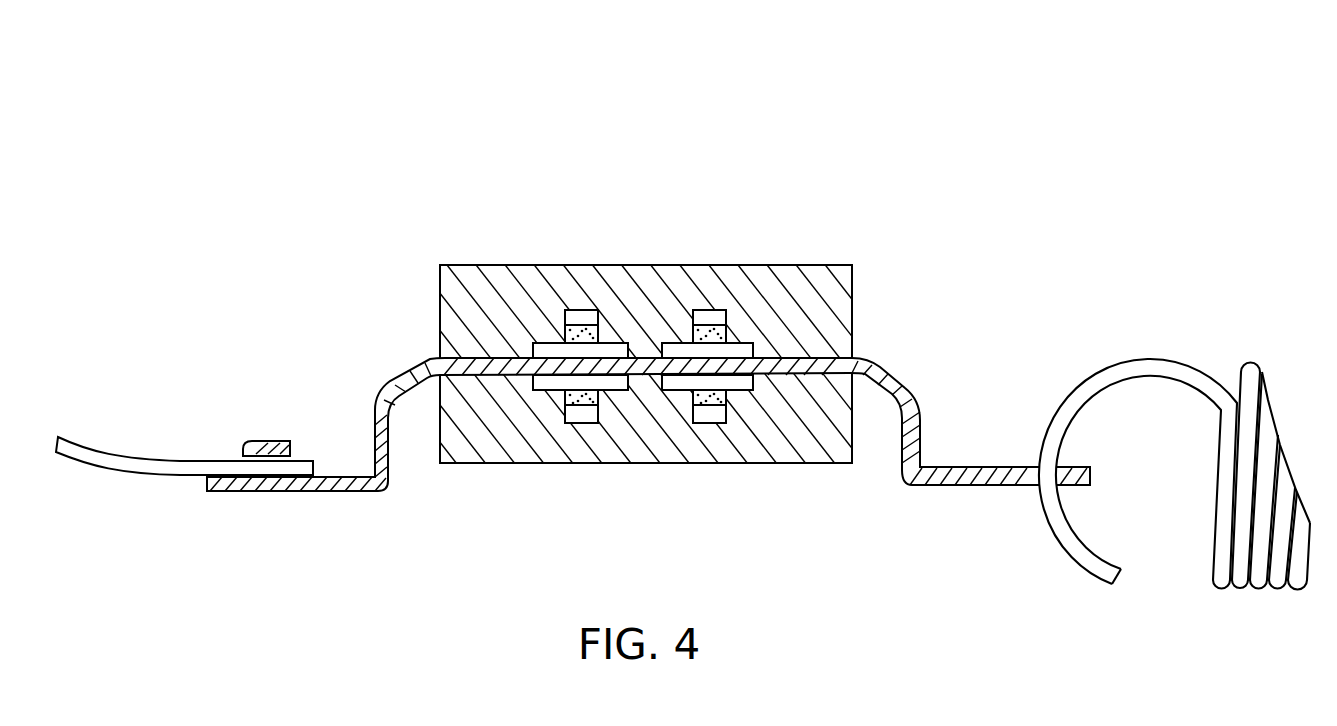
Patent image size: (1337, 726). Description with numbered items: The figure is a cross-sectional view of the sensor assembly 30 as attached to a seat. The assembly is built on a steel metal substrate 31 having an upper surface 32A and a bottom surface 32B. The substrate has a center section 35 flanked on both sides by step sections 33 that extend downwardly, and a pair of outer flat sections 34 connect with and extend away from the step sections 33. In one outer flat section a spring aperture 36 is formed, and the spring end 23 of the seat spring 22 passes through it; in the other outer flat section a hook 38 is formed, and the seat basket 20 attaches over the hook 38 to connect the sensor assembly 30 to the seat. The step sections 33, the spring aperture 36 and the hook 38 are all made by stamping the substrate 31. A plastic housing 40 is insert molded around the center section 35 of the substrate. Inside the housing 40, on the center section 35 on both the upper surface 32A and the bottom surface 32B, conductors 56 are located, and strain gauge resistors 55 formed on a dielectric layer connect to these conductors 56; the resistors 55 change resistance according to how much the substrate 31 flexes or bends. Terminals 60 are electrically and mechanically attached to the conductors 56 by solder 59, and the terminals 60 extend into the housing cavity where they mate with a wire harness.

The seat basket 20 is at (116, 459).
The seat spring 22 is at (1160, 362).
The spring end 23 is at (1088, 581).
The sensor assembly 30 is at (631, 165).
The metal substrate 31 is at (207, 489).
The upper surface 32A is at (348, 477).
The bottom surface 32B is at (322, 491).
The step sections 33 is at (412, 360).
The outer flat sections 34 is at (242, 491).
The center section 35 is at (477, 376).
The spring aperture 36 is at (1022, 467).
The hook 38 is at (256, 440).
The housing 40 is at (465, 265).
The strain gauge resistor 55 is at (619, 343).
The conductors 56 is at (753, 343).
The solder 59 is at (727, 337).
The terminals 60 is at (584, 309).